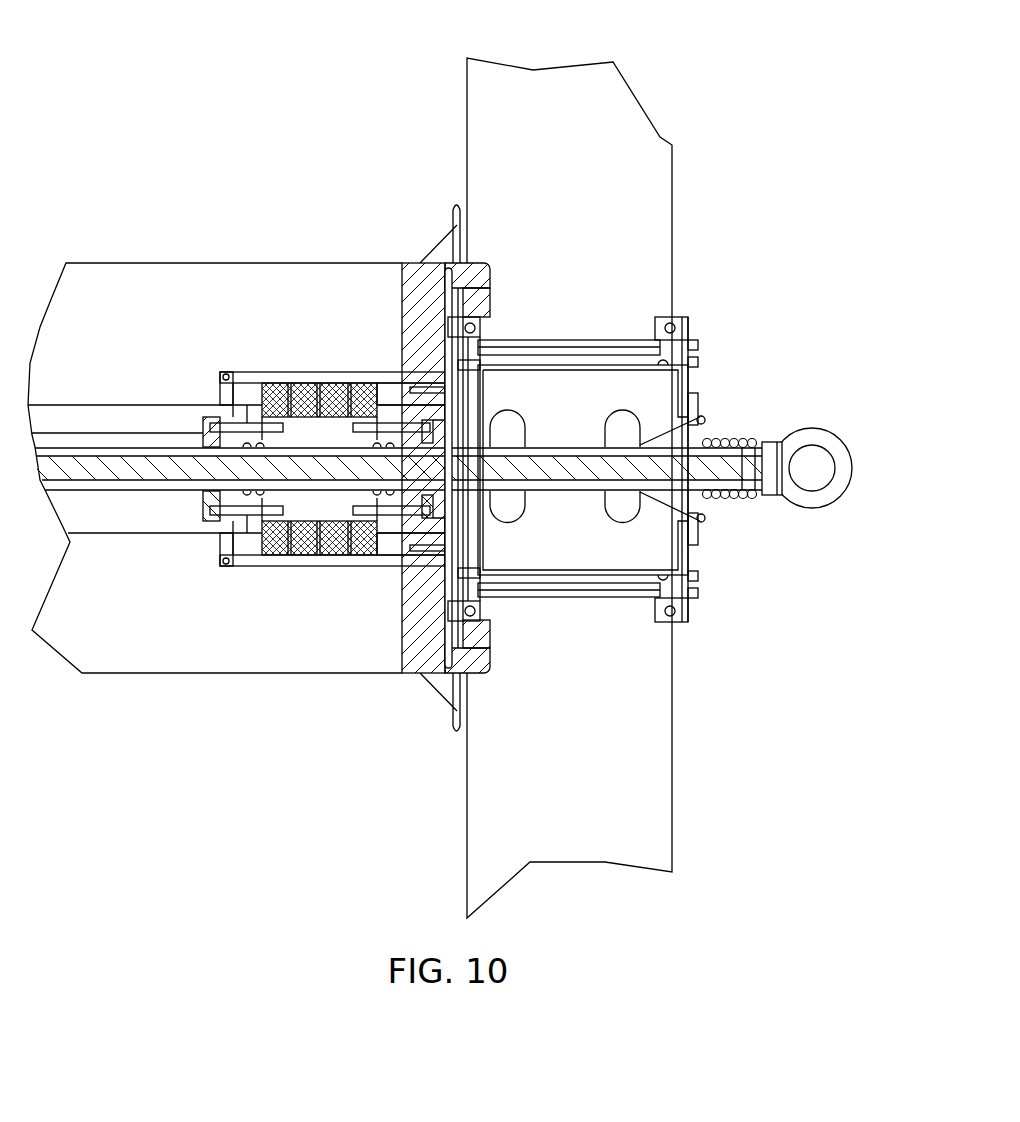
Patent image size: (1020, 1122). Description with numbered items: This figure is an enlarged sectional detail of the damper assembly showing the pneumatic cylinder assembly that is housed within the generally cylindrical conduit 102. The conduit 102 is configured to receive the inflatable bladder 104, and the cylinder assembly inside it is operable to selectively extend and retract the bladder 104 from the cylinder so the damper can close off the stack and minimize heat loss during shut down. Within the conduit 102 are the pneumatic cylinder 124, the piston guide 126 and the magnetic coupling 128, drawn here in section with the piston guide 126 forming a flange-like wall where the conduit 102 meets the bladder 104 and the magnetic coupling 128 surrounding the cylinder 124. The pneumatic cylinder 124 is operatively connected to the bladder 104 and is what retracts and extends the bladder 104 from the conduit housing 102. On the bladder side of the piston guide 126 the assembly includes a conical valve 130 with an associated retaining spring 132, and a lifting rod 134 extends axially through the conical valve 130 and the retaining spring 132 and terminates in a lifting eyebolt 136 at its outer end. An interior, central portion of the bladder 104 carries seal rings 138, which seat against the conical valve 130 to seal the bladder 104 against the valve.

The conduit 102 is at (185, 277).
The bladder 104 is at (614, 83).
The pneumatic cylinder 124 is at (121, 535).
The piston guide 126 is at (405, 675).
The magnetic coupling 128 is at (310, 562).
The conical valve 130 is at (703, 422).
The retaining spring 132 is at (745, 500).
The lifting rod 134 is at (550, 483).
The lifting eyebolt 136 is at (813, 428).
The seal rings 138 is at (608, 418).